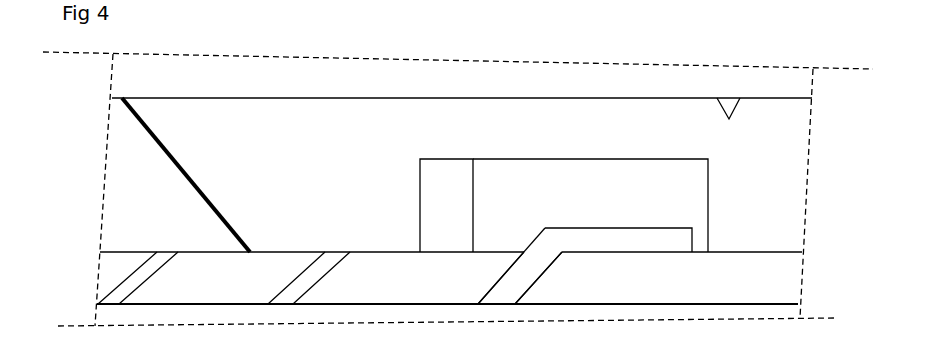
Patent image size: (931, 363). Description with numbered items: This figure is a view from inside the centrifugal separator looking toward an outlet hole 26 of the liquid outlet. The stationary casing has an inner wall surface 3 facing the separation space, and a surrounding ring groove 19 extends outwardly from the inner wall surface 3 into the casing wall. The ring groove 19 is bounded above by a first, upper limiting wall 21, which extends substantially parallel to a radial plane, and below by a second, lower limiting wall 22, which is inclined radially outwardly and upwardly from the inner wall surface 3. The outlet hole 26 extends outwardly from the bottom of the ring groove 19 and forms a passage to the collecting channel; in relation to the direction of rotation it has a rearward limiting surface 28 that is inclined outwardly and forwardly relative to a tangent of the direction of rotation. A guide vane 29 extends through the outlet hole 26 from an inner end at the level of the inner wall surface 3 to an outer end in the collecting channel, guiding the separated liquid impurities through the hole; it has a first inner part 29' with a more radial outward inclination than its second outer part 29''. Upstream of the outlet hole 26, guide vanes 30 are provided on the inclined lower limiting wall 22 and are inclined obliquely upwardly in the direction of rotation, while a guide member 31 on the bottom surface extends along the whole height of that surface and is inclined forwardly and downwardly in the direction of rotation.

The inner wall surface 3 is at (253, 76).
The ring groove 19 is at (362, 128).
The first upper limiting wall 21 is at (729, 118).
The second lower limiting wall 22 is at (652, 278).
The outlet hole 26 is at (533, 188).
The rearward limiting surface 28 is at (448, 190).
The guide vane 29 is at (545, 157).
The first inner part 29' is at (622, 131).
The second outer part 29'' is at (537, 307).
The guide vane 30 is at (125, 288).
The guide member 31 is at (170, 147).